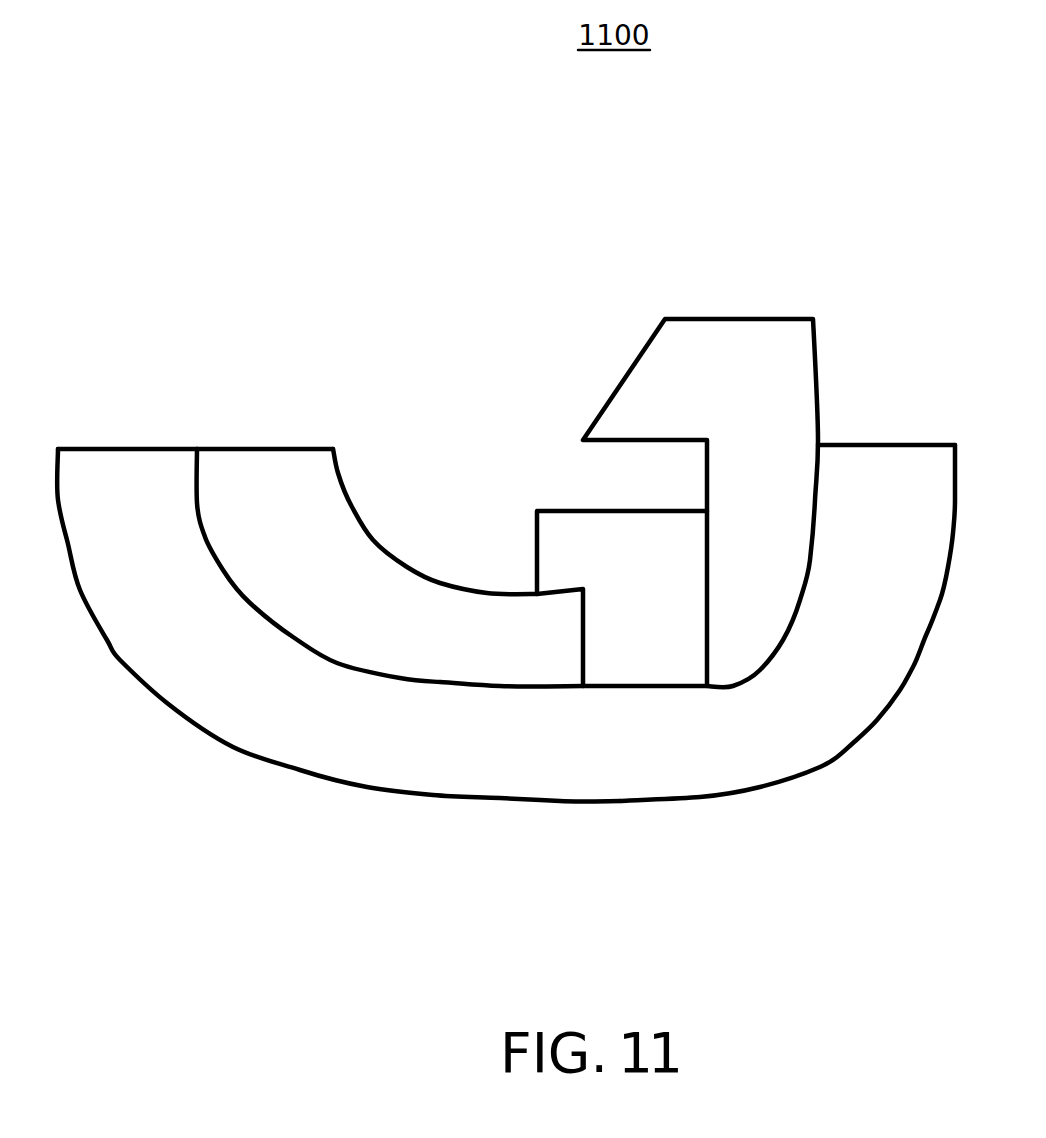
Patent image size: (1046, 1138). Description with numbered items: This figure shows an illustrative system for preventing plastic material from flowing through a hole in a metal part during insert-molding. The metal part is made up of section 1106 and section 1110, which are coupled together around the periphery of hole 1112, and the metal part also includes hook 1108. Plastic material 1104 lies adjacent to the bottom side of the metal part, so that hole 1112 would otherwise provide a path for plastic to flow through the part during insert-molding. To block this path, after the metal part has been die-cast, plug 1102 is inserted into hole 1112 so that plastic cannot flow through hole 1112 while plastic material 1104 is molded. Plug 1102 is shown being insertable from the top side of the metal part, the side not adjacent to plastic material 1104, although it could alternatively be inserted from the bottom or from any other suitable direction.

The plug 1102 is at (657, 667).
The plastic material 1104 is at (138, 502).
The section 1106 is at (780, 562).
The hook 1108 is at (693, 365).
The section 1110 is at (312, 510).
The hole 1112 is at (557, 493).